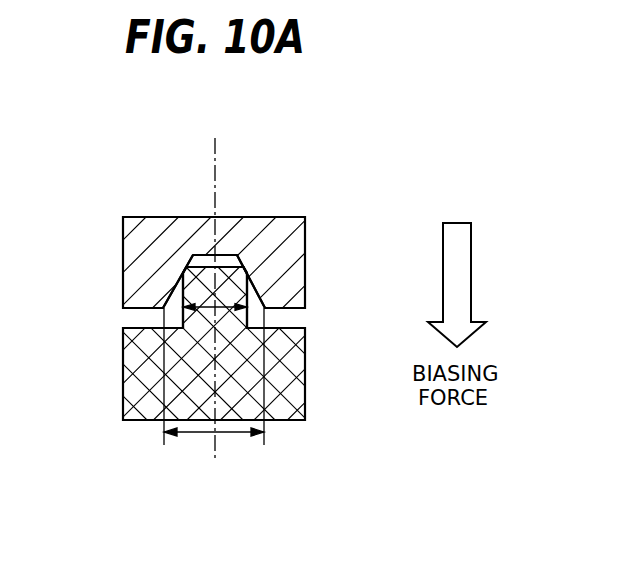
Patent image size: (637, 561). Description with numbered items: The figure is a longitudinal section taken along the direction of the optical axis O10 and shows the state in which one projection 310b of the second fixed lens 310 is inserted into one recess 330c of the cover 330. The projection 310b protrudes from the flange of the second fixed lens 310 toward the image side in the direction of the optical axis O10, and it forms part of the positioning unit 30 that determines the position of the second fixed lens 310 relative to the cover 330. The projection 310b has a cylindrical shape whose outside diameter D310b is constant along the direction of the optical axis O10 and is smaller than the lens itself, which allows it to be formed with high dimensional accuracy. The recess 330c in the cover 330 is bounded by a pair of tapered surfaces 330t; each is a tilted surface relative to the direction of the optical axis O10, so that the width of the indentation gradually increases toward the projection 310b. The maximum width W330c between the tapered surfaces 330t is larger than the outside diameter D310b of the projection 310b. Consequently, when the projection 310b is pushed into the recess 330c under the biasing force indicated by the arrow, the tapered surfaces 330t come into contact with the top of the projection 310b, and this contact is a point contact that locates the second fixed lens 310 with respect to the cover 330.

The cover 330 is at (198, 226).
The recess 330c is at (217, 250).
The tapered surfaces 330t is at (250, 297).
The positioning unit 30 is at (220, 391).
The second fixed lens 310 is at (220, 391).
The projection 310b is at (183, 282).
The optical axis O10 is at (215, 150).
The outside diameter of projection D310b is at (233, 306).
The maximum width of recess W330c is at (235, 433).